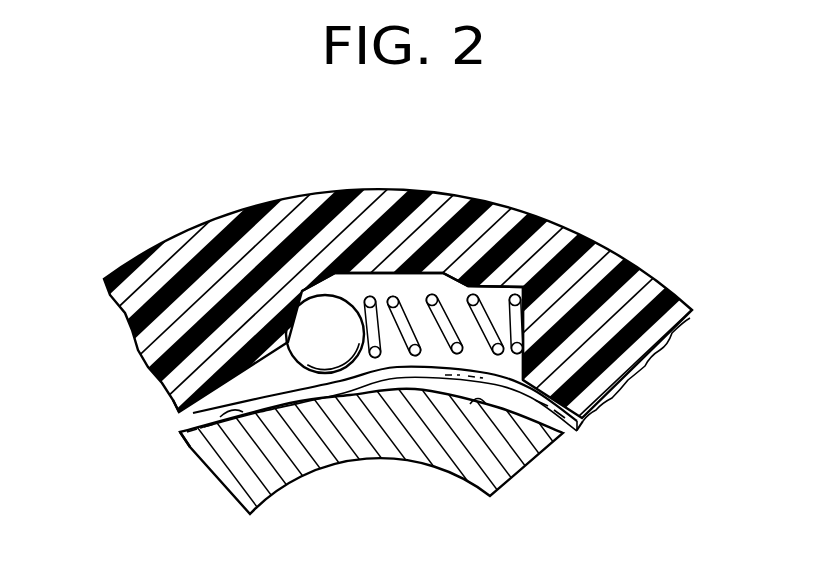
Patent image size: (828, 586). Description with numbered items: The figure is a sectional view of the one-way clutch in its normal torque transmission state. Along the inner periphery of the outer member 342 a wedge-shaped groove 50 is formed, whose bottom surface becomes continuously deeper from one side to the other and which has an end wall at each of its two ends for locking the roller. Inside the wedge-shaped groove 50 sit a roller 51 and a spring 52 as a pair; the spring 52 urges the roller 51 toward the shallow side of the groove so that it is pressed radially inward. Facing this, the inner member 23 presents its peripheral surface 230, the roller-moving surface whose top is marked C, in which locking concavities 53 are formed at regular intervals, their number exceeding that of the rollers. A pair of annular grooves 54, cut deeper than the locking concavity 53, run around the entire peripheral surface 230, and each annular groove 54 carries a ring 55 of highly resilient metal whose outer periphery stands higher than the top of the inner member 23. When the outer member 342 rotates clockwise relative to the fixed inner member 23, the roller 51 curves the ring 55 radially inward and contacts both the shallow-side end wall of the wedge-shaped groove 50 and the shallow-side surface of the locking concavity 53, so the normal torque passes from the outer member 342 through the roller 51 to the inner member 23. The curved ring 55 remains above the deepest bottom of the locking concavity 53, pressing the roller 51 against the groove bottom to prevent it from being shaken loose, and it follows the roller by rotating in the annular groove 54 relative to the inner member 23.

The outer member 342 is at (588, 260).
The wedge-shaped groove 50 is at (409, 290).
The roller 51 is at (323, 337).
The spring 52 is at (482, 318).
The annular groove 54 is at (480, 402).
The inner member 23 is at (378, 443).
The ring 55 is at (213, 415).
The locking concavity 53 is at (225, 425).
The peripheral surface 230 is at (577, 431).